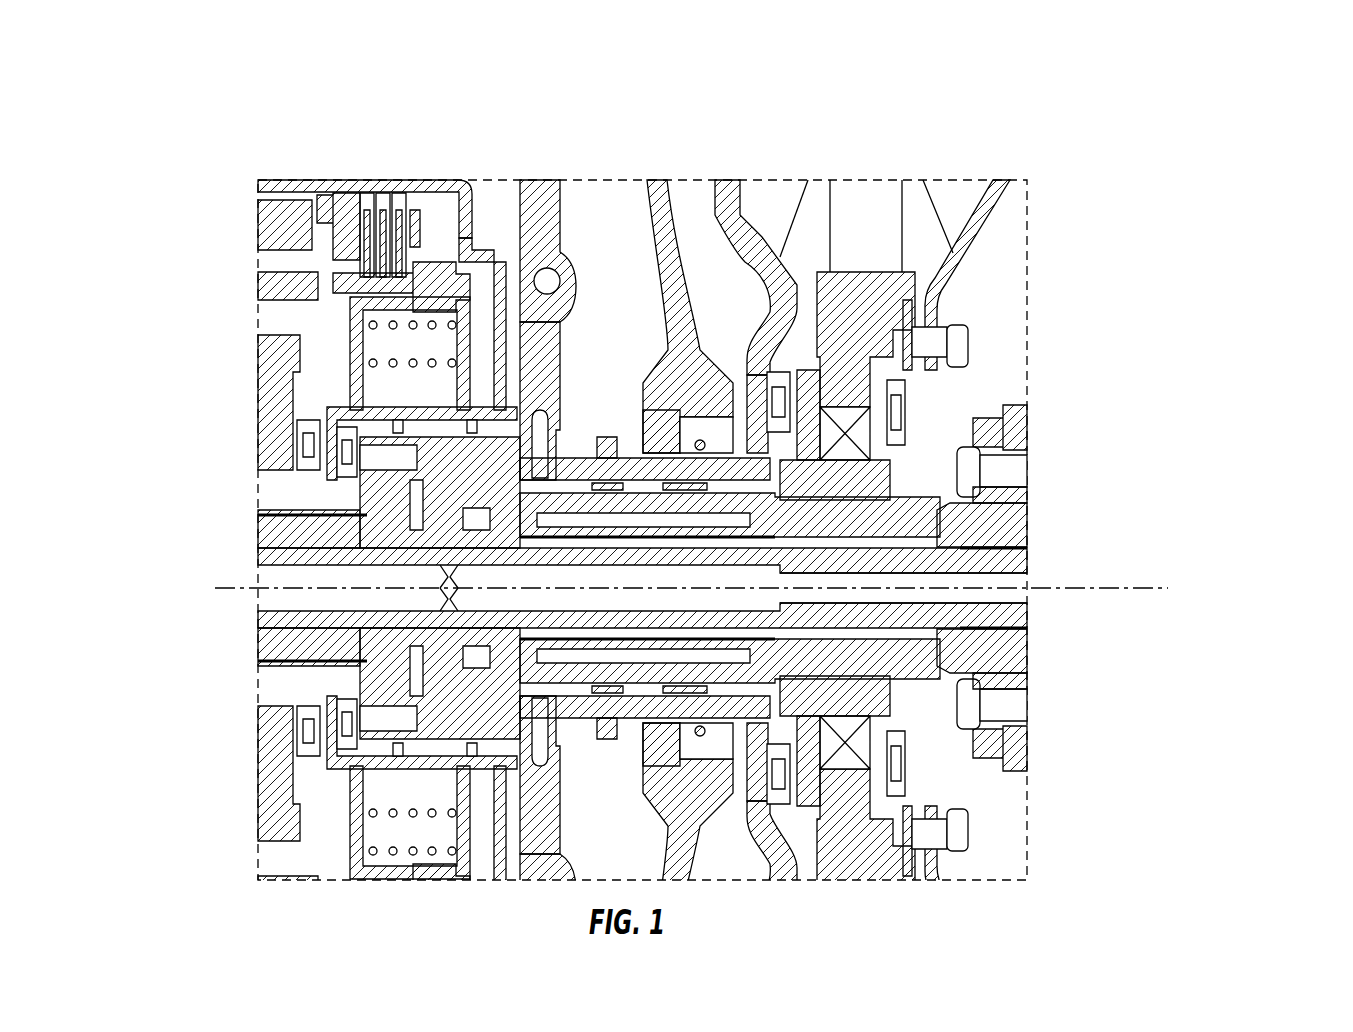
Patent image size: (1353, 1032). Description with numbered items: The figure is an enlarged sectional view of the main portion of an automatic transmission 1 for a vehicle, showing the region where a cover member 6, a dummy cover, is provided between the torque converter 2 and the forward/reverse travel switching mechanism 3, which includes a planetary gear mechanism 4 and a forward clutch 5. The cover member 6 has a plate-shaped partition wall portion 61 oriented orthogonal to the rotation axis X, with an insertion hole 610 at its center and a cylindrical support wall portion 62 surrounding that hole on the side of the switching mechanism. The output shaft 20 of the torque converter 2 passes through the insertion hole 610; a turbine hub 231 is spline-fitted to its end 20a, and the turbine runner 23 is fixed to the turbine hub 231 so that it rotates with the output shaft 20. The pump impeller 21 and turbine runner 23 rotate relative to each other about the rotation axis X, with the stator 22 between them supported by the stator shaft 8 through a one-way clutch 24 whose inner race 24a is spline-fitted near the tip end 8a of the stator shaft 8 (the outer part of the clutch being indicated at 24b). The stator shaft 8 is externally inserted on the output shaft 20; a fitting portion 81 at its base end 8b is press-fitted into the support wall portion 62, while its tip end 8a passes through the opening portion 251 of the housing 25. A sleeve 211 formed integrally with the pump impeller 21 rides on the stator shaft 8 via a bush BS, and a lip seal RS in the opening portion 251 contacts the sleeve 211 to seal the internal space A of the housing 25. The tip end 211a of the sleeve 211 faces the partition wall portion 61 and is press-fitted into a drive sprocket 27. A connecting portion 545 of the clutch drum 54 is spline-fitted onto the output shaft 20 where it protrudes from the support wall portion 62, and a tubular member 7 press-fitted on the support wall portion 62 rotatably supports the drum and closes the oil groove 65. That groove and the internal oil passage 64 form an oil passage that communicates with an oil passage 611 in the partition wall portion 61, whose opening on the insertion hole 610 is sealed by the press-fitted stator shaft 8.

The automatic transmission 1 is at (736, 366).
The torque converter 2 is at (706, 367).
The forward/reverse travel switching mechanism 3 is at (331, 315).
The planetary gear mechanism 4 is at (251, 255).
The forward clutch 5 is at (465, 158).
The cover member 6 is at (567, 247).
The tubular member 7 is at (530, 372).
The stator shaft 8 is at (372, 558).
The tip end 8a is at (903, 590).
The base end 8b is at (360, 518).
The output shaft 20 is at (1040, 616).
The end 20a is at (1027, 608).
The pump impeller 21 is at (722, 178).
The sleeve 211 is at (745, 440).
The tip end 211a is at (600, 540).
The stator 22 is at (855, 190).
The turbine runner 23 is at (1000, 185).
The turbine hub 231 is at (1027, 522).
The one-way clutch 24 is at (967, 426).
The inner race 24a is at (1029, 477).
The rotor hub second portion 24b is at (1027, 392).
The housing 25 is at (660, 178).
The opening portion 251 is at (640, 440).
The drive sprocket 27 is at (600, 438).
The clutch drum 54 is at (471, 228).
The connecting portion 545 is at (258, 512).
The partition wall portion 61 is at (560, 222).
The insertion hole 610 is at (547, 455).
The oil passage 611 is at (557, 482).
The support wall portion 62 is at (484, 520).
The internal oil passage 64 is at (480, 455).
The oil groove 65 is at (398, 456).
The fitting portion 81 is at (416, 616).
The internal space A is at (676, 252).
The bush BS is at (682, 492).
The lip seal RS is at (708, 425).
The rotation axis X is at (704, 588).